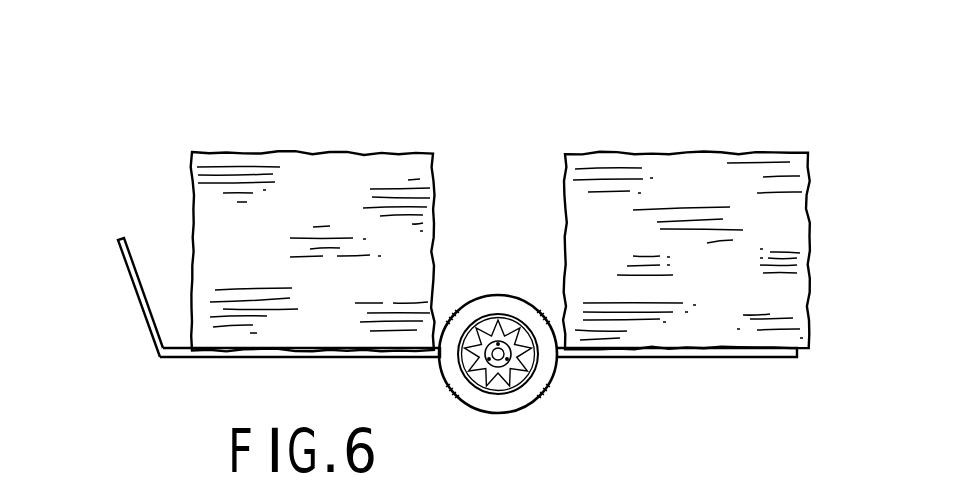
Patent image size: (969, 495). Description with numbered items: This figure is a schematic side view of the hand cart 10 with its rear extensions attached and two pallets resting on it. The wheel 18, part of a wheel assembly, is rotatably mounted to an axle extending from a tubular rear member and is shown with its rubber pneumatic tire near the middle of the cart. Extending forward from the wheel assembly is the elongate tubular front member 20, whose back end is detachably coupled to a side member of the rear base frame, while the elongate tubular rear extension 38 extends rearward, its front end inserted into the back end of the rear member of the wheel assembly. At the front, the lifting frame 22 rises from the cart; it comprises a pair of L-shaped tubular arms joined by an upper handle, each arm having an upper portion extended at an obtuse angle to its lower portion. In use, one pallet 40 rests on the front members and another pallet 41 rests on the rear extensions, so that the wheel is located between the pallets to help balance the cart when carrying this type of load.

The trailer 10 is at (727, 118).
The wheel 18 is at (540, 395).
The front member 20 is at (248, 360).
The lifting frame 22 is at (117, 278).
The rear extension 38 is at (710, 357).
The pallet 40 is at (295, 153).
The pallet 41 is at (597, 160).